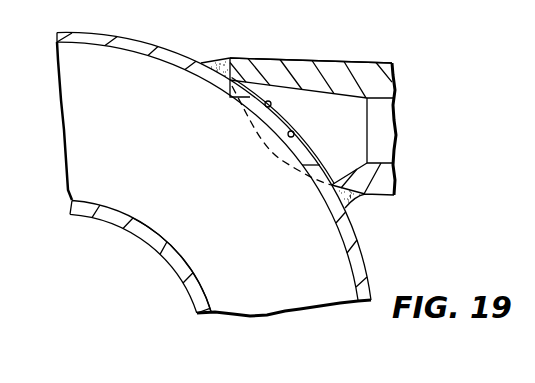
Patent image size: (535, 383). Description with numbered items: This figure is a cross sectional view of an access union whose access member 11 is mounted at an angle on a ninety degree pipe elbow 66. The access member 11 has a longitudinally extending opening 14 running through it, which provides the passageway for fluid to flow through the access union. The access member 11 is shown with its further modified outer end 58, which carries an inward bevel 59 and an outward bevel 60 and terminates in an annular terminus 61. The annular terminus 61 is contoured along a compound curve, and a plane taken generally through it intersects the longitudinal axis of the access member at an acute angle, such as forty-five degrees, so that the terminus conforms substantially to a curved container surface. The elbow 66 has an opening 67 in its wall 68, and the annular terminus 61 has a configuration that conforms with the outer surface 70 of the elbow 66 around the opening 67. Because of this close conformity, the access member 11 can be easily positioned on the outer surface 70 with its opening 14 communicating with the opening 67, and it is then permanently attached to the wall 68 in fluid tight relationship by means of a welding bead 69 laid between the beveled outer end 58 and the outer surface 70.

The access member 11 is at (352, 60).
The opening 14 is at (397, 112).
The outer end 58 is at (392, 194).
The inward bevel 59 is at (306, 61).
The outward bevel 60 is at (343, 100).
The annular terminus 61 is at (294, 132).
The elbow 66 is at (122, 230).
The opening 67 is at (237, 105).
The welding bead 69 is at (238, 57).
The outer surface 70 is at (100, 34).
The wall 68 is at (196, 276).